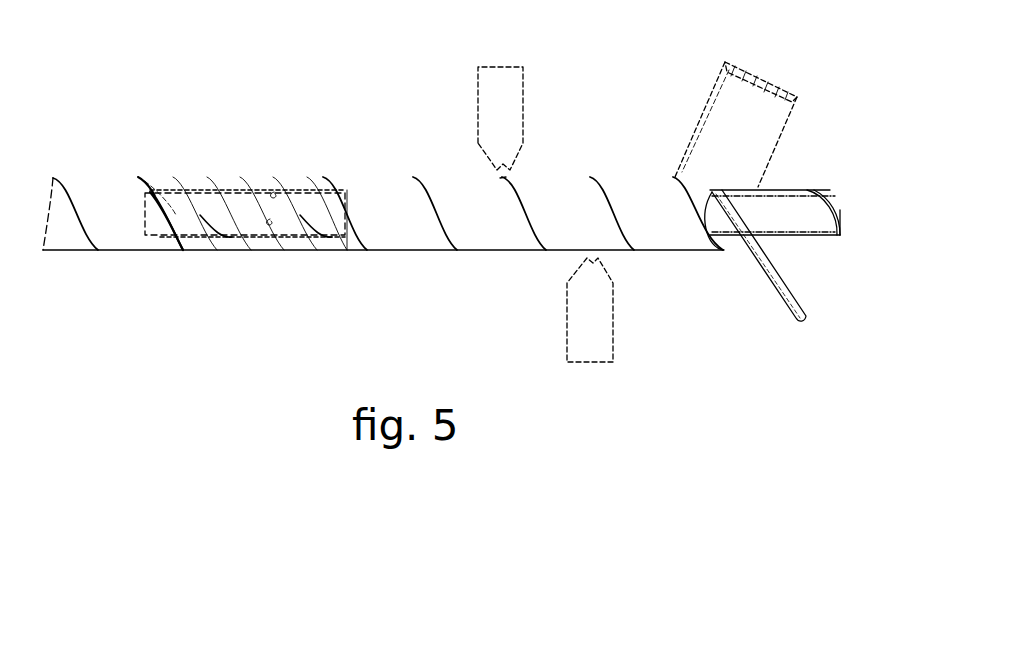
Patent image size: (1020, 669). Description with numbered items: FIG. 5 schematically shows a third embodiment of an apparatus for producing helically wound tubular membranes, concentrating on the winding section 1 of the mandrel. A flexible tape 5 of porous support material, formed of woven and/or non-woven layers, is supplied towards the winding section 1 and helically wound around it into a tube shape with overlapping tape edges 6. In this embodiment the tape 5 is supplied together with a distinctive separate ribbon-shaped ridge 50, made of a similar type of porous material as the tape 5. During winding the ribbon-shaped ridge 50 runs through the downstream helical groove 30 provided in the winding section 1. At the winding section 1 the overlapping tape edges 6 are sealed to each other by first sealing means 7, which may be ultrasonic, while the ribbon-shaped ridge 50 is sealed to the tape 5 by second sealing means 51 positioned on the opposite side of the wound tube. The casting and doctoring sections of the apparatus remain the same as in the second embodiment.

The winding section 1 is at (792, 201).
The tape 5 is at (728, 95).
The overlapping tape edges 6 is at (612, 220).
The first sealing means 7 is at (505, 98).
The downstream helical groove 30 is at (838, 215).
The ribbon-shaped ridge 50 is at (790, 297).
The second sealing means 51 is at (592, 345).